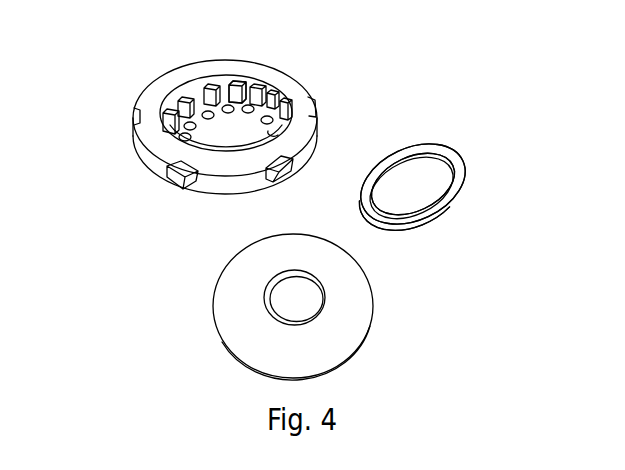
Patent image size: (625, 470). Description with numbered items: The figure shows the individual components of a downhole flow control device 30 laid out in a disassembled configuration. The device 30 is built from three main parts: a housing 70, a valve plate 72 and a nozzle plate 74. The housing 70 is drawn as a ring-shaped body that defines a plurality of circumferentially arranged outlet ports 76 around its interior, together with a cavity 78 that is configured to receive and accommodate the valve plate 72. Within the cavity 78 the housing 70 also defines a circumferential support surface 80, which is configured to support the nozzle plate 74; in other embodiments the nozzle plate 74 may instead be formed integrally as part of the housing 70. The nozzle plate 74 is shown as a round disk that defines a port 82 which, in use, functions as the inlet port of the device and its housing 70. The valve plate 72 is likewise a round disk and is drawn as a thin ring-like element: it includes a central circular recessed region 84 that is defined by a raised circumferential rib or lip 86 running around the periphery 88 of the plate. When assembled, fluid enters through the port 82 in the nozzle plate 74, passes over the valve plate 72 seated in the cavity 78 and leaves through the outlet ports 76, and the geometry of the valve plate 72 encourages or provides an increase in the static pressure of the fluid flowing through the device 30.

The downhole flow control device 30 is at (114, 77).
The housing 70 is at (298, 92).
The valve plate 72 is at (460, 167).
The nozzle plate 74 is at (253, 333).
The outlet ports 76 is at (278, 110).
The cavity 78 is at (228, 137).
The circumferential support surface 80 is at (238, 84).
The port 82 is at (297, 307).
The central circular recessed region 84 is at (427, 190).
The raised circumferential rib or lip 86 is at (431, 152).
The periphery 88 is at (465, 185).